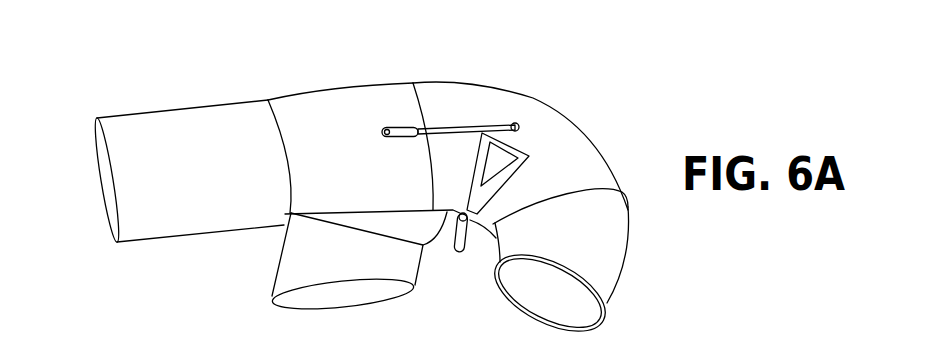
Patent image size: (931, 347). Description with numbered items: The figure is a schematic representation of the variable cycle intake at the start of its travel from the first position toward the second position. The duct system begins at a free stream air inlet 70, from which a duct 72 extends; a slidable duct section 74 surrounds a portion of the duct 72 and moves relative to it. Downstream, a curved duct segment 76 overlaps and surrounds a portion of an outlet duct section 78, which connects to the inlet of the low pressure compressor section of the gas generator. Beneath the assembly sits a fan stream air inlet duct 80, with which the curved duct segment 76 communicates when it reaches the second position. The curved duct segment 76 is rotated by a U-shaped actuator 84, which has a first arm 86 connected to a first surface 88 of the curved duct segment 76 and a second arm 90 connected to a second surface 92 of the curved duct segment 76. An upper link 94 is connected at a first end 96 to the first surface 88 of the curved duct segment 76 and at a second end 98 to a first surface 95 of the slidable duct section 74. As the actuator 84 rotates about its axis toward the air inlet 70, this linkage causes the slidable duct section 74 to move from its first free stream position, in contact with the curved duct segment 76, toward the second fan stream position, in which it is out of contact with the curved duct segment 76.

The free stream air inlet 70 is at (100, 168).
The duct 72 is at (163, 137).
The slidable duct section 74 is at (292, 112).
The curved duct segment 76 is at (588, 143).
The outlet duct section 78 is at (620, 240).
The fan stream air inlet duct 80 is at (278, 258).
The U-shaped actuator 84 is at (438, 268).
The first arm 86 is at (527, 167).
The first surface 88 is at (550, 128).
The second arm 90 is at (475, 238).
The second surface 92 is at (452, 211).
The upper link 94 is at (442, 128).
The first surface 95 is at (365, 112).
The first end 96 is at (515, 123).
The second end 98 is at (380, 131).